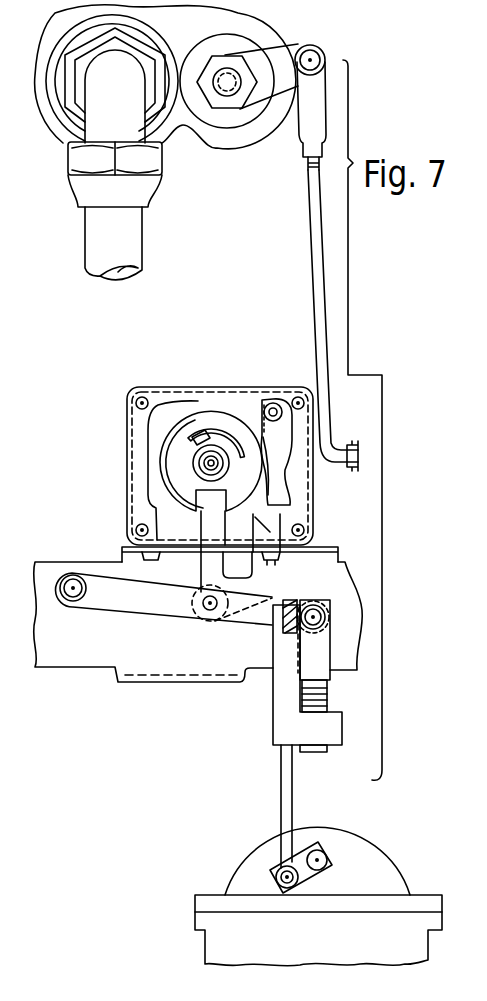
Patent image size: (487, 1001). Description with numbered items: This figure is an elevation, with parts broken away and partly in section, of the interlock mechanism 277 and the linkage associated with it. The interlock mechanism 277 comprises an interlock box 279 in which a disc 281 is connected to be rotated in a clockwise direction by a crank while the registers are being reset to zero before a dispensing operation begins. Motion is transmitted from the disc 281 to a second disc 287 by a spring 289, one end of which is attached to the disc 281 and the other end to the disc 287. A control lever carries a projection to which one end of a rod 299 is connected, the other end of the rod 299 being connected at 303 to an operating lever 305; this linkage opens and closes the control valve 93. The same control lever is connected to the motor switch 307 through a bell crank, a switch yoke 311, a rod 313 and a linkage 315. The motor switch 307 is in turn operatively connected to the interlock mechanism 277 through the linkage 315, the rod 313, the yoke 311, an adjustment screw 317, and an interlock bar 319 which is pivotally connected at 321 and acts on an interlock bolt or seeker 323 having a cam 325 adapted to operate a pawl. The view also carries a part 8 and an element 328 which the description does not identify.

The control valve 93 is at (205, 143).
The operating lever 305 is at (300, 45).
The connection 303 is at (326, 58).
The rod 299 is at (310, 218).
The section line 8 is at (302, 340).
The interlock mechanism 277 is at (135, 381).
The interlock box 279 is at (127, 418).
The disc 281 is at (170, 483).
The spring 289 is at (200, 427).
The disc 287 is at (235, 411).
The stop 328 is at (287, 507).
The cam 325 is at (272, 566).
The interlock bar 319 is at (158, 610).
The pivot 321 is at (75, 600).
The interlock bolt or seeker 323 is at (203, 568).
The switch yoke 311 is at (282, 703).
The adjustment screw 317 is at (323, 662).
The rod 313 is at (281, 773).
The motor switch 307 is at (381, 848).
The linkage 315 is at (312, 875).